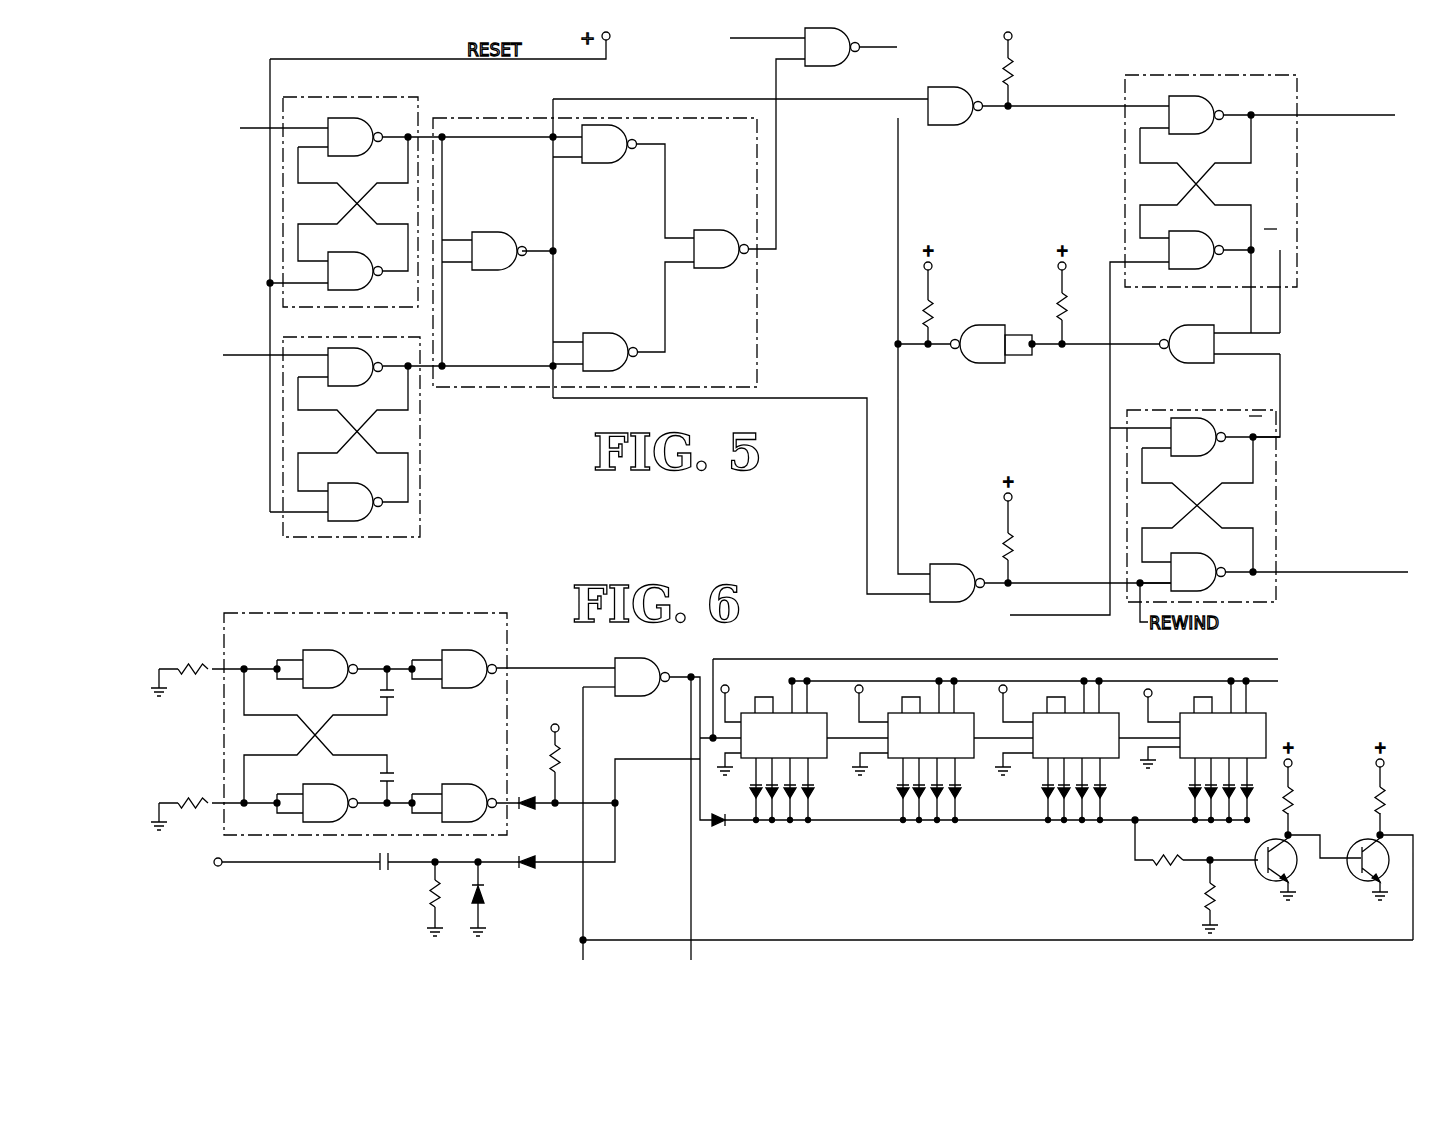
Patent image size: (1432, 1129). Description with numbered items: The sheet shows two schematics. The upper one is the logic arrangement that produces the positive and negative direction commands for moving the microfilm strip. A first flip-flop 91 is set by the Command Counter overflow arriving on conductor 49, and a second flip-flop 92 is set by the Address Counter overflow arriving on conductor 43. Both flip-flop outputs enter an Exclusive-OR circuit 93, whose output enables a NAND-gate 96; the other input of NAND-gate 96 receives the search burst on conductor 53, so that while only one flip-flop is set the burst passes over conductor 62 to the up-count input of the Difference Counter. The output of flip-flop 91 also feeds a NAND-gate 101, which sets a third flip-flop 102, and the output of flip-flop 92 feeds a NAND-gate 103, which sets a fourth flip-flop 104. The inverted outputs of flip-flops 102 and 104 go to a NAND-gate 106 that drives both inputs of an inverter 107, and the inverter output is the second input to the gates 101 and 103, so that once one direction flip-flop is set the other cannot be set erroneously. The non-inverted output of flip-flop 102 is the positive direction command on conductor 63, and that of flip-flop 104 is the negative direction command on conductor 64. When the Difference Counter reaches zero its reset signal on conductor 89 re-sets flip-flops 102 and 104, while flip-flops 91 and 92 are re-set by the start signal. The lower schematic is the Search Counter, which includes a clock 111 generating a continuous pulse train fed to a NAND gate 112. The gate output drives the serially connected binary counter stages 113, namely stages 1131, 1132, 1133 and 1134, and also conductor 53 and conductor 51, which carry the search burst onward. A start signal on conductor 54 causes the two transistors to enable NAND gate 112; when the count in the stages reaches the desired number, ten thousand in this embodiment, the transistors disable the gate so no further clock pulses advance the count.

In FIG. 5, the conductor 43 is at (247, 360).
In FIG. 5, the conductor 49 is at (257, 128).
In FIG. 6, the conductor 51 is at (1237, 640).
In FIG. 5, the conductor 53 is at (745, 40).
In FIG. 6, the conductor 53 is at (691, 897).
In FIG. 6, the conductor 54 is at (320, 863).
In FIG. 5, the conductor 62 is at (872, 49).
In FIG. 5, the conductor 63 is at (1370, 114).
In FIG. 5, the conductor 64 is at (1392, 553).
In FIG. 5, the conductor 89 is at (1087, 616).
In FIG. 5, the first flip-flop 91 is at (413, 78).
In FIG. 5, the second flip-flop 92 is at (368, 538).
In FIG. 5, the Exclusive-OR circuit 93 is at (520, 388).
In FIG. 5, the NAND-gate 96 is at (826, 54).
In FIG. 5, the NAND-gate 101 is at (960, 127).
In FIG. 5, the third flip-flop 102 is at (1257, 74).
In FIG. 5, the NAND-gate 103 is at (955, 603).
In FIG. 5, the fourth flip-flop 104 is at (1205, 408).
In FIG. 5, the NAND-gate 106 is at (1190, 328).
In FIG. 5, the inverter 107 is at (992, 363).
In FIG. 6, the clock 111 is at (348, 612).
In FIG. 6, the NAND gate 112 is at (657, 641).
In FIG. 6, the binary counter stages 113 is at (1021, 744).
In FIG. 6, the binary counter stage 1131 is at (817, 750).
In FIG. 6, the binary counter stage 1132 is at (962, 750).
In FIG. 6, the binary counter stage 1133 is at (1115, 752).
In FIG. 6, the binary counter stage 1134 is at (1260, 721).